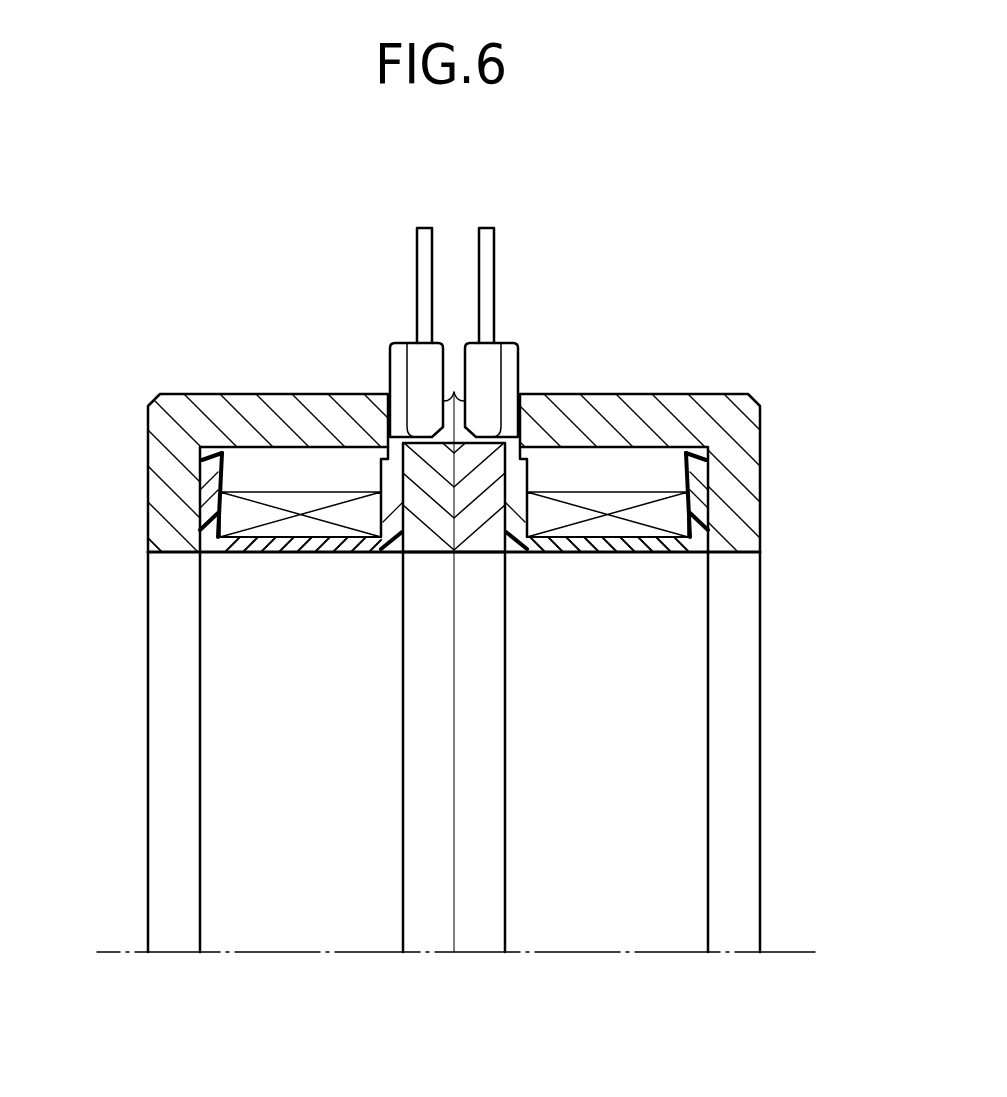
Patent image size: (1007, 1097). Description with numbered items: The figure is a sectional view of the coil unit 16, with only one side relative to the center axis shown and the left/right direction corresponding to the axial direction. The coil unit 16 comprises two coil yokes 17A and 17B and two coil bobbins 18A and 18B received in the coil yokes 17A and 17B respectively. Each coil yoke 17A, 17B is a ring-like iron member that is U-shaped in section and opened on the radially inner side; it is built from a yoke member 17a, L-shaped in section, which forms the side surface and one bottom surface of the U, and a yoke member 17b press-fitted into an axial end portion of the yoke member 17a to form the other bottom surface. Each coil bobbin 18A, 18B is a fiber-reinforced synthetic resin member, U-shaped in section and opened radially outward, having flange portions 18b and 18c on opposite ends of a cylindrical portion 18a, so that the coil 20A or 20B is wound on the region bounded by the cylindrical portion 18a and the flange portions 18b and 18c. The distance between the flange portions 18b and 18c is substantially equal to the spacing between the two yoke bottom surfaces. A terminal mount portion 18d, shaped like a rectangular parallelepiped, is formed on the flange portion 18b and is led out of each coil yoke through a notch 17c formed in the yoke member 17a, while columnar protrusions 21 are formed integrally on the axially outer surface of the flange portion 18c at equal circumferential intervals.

The coil unit 16 is at (117, 320).
The coil yoke 17A is at (147, 402).
The coil yoke 17B is at (762, 402).
The yoke member 17a is at (157, 465).
The yoke member 17b is at (412, 553).
The notch 17c is at (454, 392).
The coil bobbin 18A is at (259, 556).
The coil bobbin 18B is at (649, 556).
The cylindrical portion 18a is at (318, 553).
The flange portion 18b is at (390, 500).
The flange portion 18c is at (198, 524).
The terminal mount portion 18d is at (387, 342).
The coil 20A is at (263, 498).
The coil 20B is at (668, 498).
The columnar protrusion 21 is at (205, 455).